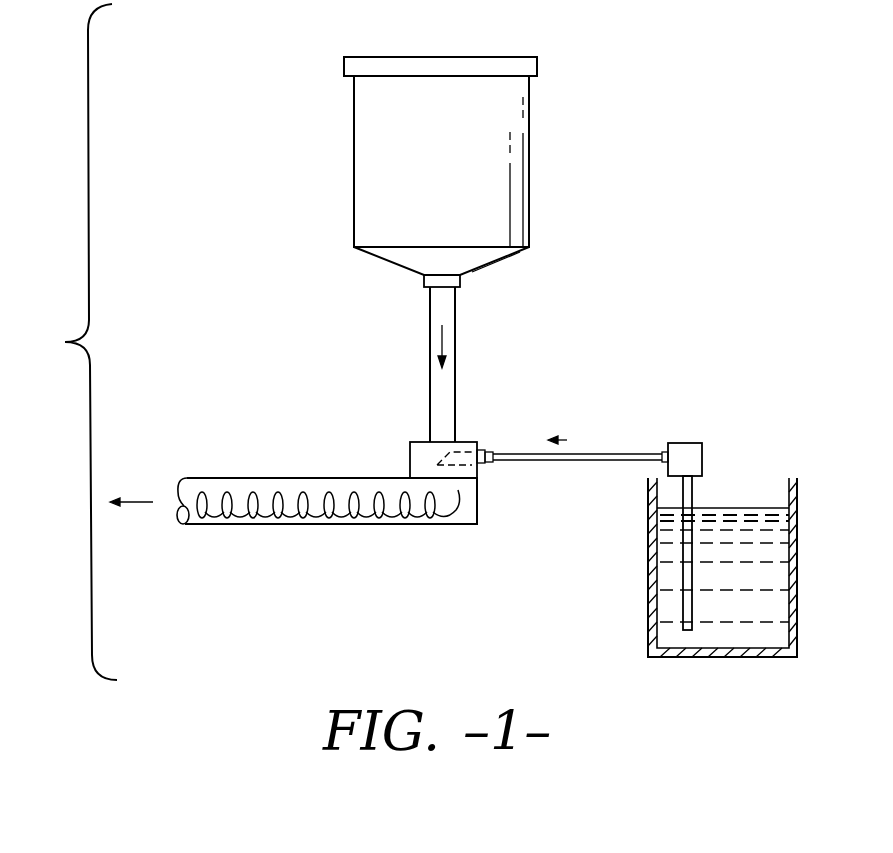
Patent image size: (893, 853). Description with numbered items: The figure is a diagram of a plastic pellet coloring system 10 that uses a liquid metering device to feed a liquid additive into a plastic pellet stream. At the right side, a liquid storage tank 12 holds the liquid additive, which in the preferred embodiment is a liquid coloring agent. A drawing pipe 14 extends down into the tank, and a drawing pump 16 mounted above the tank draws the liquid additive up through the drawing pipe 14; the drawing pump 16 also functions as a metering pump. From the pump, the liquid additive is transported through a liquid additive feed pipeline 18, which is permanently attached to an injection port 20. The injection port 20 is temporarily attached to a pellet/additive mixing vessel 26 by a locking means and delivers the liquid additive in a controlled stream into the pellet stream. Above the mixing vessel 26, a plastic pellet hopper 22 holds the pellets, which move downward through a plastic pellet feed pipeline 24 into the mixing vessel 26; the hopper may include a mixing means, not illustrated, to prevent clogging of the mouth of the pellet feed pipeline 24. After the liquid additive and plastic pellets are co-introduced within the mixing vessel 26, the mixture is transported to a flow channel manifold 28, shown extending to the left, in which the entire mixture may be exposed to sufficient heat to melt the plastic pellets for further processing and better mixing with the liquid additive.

The plastic pellet coloring system 10 is at (71, 342).
The liquid storage tank 12 is at (742, 478).
The drawing pipe 14 is at (680, 603).
The drawing pump 16 is at (690, 443).
The liquid additive feed pipeline 18 is at (622, 453).
The injection port 20 is at (480, 442).
The plastic pellet hopper 22 is at (493, 56).
The plastic pellet feed pipeline 24 is at (430, 367).
The pellet/additive mixing vessel 26 is at (425, 452).
The flow channel manifold 28 is at (280, 492).